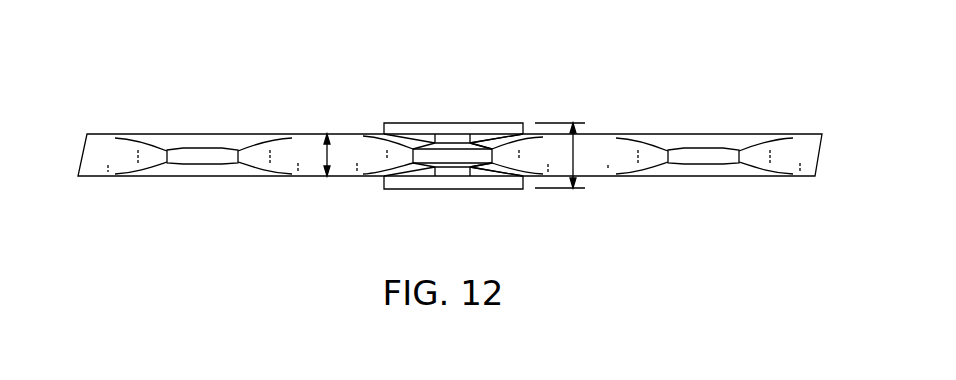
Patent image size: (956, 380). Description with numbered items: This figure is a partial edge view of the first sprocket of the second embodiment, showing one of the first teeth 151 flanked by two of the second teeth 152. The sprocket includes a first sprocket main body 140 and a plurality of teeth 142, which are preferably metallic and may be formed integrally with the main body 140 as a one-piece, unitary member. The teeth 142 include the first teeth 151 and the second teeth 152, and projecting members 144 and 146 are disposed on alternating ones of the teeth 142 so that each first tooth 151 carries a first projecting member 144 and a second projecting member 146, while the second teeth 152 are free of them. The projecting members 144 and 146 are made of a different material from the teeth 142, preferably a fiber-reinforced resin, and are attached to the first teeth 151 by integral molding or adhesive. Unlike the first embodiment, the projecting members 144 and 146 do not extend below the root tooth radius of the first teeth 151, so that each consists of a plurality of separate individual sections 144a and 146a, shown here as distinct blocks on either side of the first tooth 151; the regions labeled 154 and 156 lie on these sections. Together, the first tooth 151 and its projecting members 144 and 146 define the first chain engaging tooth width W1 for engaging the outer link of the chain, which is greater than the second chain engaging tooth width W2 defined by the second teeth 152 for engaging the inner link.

The first sprocket main body 140 is at (170, 133).
The teeth 142 is at (170, 210).
The first projecting member 144 is at (407, 191).
The separate individual sections 144a is at (448, 183).
The second projecting member 146 is at (403, 122).
The separate individual sections 146a is at (438, 130).
The first teeth 151 is at (455, 153).
The second teeth 152 is at (203, 155).
The lower crimp tapered portion 154 is at (497, 176).
The upper crimp tapered portion 156 is at (497, 145).
The first chain engaging tooth width W1 is at (575, 156).
The second chain engaging tooth width W2 is at (330, 156).